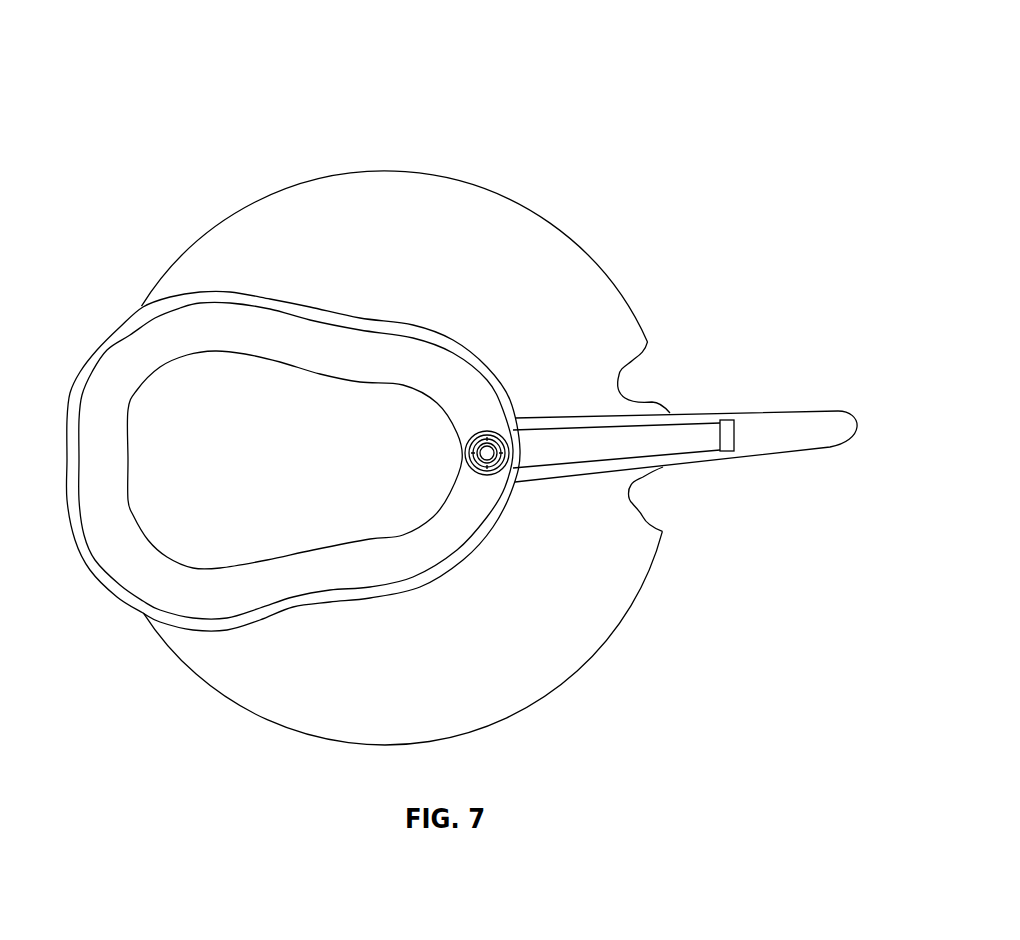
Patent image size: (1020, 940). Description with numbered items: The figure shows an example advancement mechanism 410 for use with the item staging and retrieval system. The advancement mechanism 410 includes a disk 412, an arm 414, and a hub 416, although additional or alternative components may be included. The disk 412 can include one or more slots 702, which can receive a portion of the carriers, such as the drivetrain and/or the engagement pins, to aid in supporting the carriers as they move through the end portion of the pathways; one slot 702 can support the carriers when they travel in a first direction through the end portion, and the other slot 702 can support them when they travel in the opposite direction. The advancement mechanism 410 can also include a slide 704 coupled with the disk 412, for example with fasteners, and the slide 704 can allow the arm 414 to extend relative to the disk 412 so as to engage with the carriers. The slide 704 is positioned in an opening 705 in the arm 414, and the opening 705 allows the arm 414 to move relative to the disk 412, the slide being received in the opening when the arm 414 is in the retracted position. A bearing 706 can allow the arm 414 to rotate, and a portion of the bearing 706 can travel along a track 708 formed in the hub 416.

The advancement mechanism 410 is at (100, 118).
The disk 412 is at (618, 290).
The arm 414 is at (832, 411).
The hub 416 is at (97, 345).
The slots 702 is at (623, 392).
The slide 704 is at (717, 440).
The opening 705 is at (720, 425).
The bearing 706 is at (492, 472).
The track 708 is at (107, 415).